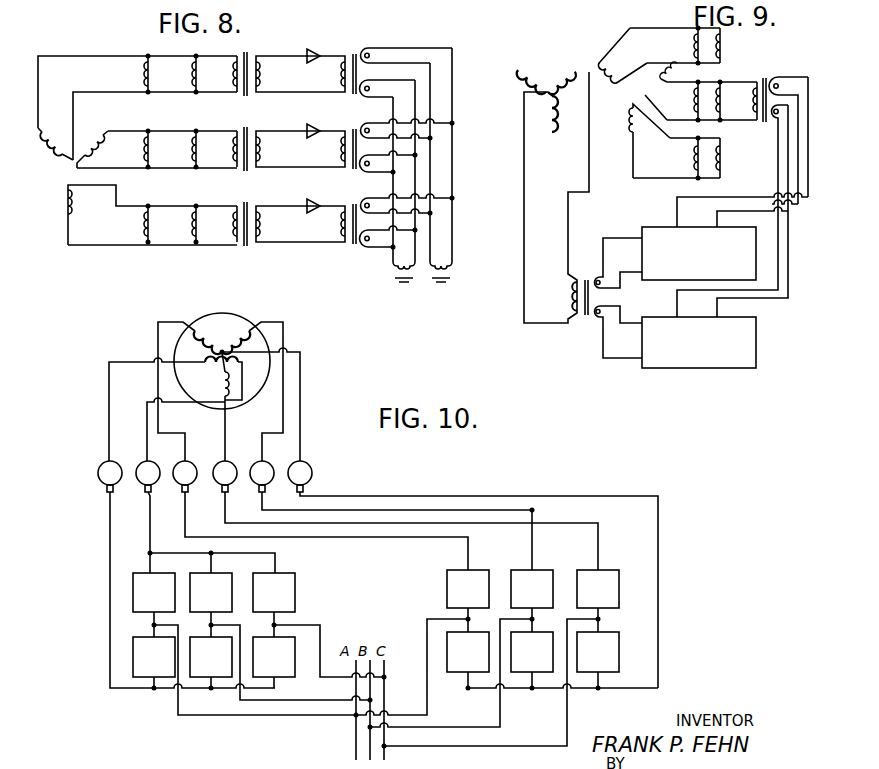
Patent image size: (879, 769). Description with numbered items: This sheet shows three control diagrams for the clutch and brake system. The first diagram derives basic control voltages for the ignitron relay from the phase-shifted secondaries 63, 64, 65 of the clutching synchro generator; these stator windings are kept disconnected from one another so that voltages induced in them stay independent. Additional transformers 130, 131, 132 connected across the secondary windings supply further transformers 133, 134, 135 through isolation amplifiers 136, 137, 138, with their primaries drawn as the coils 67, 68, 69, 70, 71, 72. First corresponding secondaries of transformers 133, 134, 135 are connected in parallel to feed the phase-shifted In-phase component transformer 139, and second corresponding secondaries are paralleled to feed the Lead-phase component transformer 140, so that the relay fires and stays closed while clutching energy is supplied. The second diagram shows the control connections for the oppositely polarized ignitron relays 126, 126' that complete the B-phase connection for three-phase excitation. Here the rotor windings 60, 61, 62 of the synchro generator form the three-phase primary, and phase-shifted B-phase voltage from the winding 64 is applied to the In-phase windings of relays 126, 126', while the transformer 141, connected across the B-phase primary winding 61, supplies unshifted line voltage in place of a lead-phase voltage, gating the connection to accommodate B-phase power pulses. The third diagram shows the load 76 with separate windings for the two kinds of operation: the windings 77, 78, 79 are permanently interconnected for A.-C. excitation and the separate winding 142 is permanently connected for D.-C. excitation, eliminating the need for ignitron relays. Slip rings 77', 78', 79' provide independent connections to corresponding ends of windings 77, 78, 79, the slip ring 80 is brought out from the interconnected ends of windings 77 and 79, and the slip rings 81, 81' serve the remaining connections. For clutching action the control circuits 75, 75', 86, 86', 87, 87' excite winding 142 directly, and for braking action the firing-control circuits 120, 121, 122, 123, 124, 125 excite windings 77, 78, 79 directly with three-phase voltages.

In FIG. 9, the rotor winding 60 is at (531, 73).
In FIG. 9, the rotor winding 61 is at (564, 90).
In FIG. 9, the rotor winding 62 is at (556, 120).
In FIG. 8, the secondary winding 63 is at (55, 139).
In FIG. 9, the secondary winding 63 is at (622, 56).
In FIG. 8, the secondary winding 64 is at (92, 141).
In FIG. 9, the secondary winding 64 is at (661, 90).
In FIG. 8, the secondary winding 65 is at (76, 204).
In FIG. 9, the secondary winding 65 is at (630, 126).
In FIG. 8, the coil 67 is at (144, 72).
In FIG. 9, the coil 67 is at (694, 42).
In FIG. 8, the coil 68 is at (192, 72).
In FIG. 9, the coil 68 is at (728, 42).
In FIG. 8, the coil 69 is at (144, 150).
In FIG. 9, the coil 69 is at (694, 106).
In FIG. 8, the coil 70 is at (192, 152).
In FIG. 9, the coil 70 is at (733, 101).
In FIG. 8, the coil 71 is at (144, 227).
In FIG. 9, the coil 71 is at (694, 153).
In FIG. 8, the coil 72 is at (192, 227).
In FIG. 9, the coil 72 is at (728, 153).
In FIG. 10, the control circuit 75 is at (147, 583).
In FIG. 10, the control circuit 75' is at (145, 649).
In FIG. 10, the load 76 is at (238, 310).
In FIG. 10, the load winding 77 is at (190, 390).
In FIG. 10, the load winding 78 is at (261, 390).
In FIG. 10, the load winding 79 is at (188, 406).
In FIG. 10, the slip ring 77' is at (320, 505).
In FIG. 10, the slip ring 78' is at (391, 506).
In FIG. 10, the slip ring 79' is at (405, 505).
In FIG. 10, the slip ring 80 is at (473, 564).
In FIG. 10, the slip ring 81 is at (176, 565).
In FIG. 10, the meter 81' is at (195, 508).
In FIG. 10, the control circuit 86 is at (206, 584).
In FIG. 10, the control circuit 86' is at (209, 649).
In FIG. 10, the control circuit 87 is at (283, 582).
In FIG. 10, the control circuit 87' is at (284, 668).
In FIG. 10, the firing-control circuit 120 is at (456, 572).
In FIG. 10, the firing-control circuit 121 is at (523, 572).
In FIG. 10, the firing-control circuit 122 is at (588, 572).
In FIG. 10, the firing-control circuit 123 is at (462, 676).
In FIG. 10, the firing-control circuit 124 is at (526, 676).
In FIG. 10, the firing-control circuit 125 is at (594, 676).
In FIG. 9, the ignitron relay 126 is at (691, 243).
In FIG. 9, the ignitron relay 126' is at (704, 358).
In FIG. 8, the transformer 130 is at (289, 74).
In FIG. 8, the transformer 131 is at (289, 149).
In FIG. 8, the transformer 132 is at (289, 224).
In FIG. 8, the transformer 133 is at (346, 80).
In FIG. 8, the transformer 134 is at (346, 156).
In FIG. 8, the transformer 135 is at (346, 232).
In FIG. 8, the isolation amplifier 136 is at (317, 53).
In FIG. 8, the isolation amplifier 137 is at (315, 129).
In FIG. 8, the isolation amplifier 138 is at (315, 204).
In FIG. 8, the In-phase component transformer 139 is at (396, 288).
In FIG. 8, the Lead-phase component transformer 140 is at (436, 290).
In FIG. 9, the transformer 141 is at (586, 322).
In FIG. 10, the winding 142 is at (214, 366).